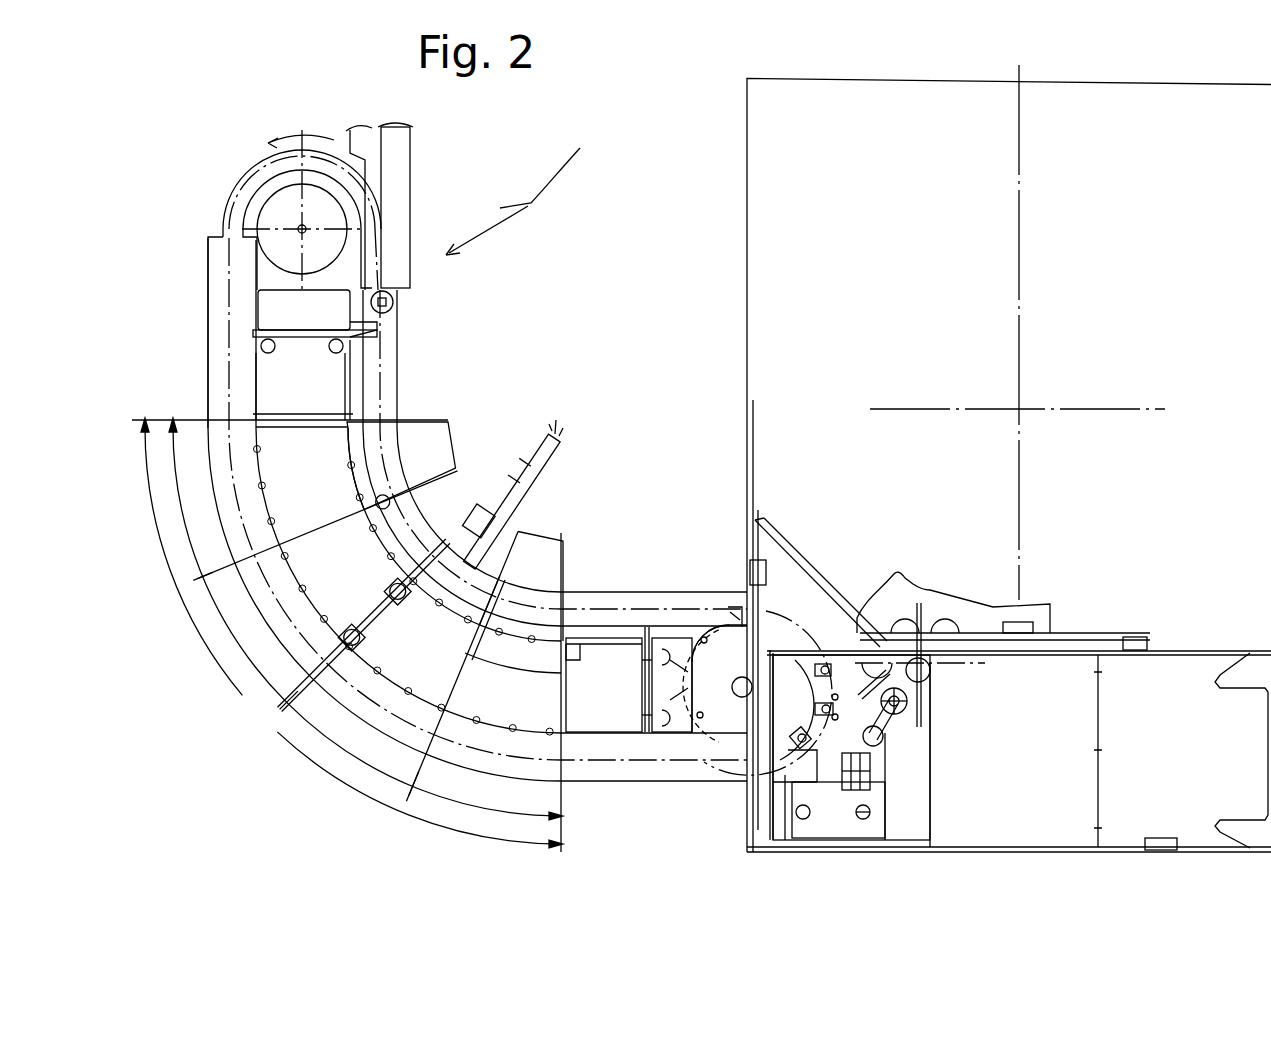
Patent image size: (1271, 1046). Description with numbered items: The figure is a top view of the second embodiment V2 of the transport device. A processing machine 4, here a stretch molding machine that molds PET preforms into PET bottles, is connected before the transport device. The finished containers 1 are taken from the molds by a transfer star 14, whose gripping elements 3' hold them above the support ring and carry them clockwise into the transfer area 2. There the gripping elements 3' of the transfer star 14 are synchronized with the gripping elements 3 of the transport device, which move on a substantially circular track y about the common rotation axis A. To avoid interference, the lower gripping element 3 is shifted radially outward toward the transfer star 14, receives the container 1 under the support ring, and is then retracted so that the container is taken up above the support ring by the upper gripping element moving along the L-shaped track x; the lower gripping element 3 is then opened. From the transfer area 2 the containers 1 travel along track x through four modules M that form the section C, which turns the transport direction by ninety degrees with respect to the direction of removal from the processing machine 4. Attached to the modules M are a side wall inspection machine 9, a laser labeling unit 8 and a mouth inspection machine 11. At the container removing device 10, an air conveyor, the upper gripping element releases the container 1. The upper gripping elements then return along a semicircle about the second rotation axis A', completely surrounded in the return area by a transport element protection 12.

The container 1 is at (396, 300).
The transfer area 2 is at (797, 780).
The gripping element 3 is at (629, 731).
The gripping element 3' is at (936, 720).
The processing machine 4 is at (747, 257).
The laser labeling unit 8 is at (558, 440).
The side wall inspection machine 9 is at (541, 546).
The container removing device 10 is at (400, 180).
The mouth inspection machine 11 is at (440, 445).
The transport element protection 12 is at (207, 280).
The transfer star 14 is at (930, 606).
The rotation axis A is at (757, 723).
The second rotation axis A' is at (293, 203).
The track x is at (700, 606).
The track y is at (702, 636).
The embodiment V2 is at (533, 183).
The section C is at (352, 633).
The module M is at (366, 619).